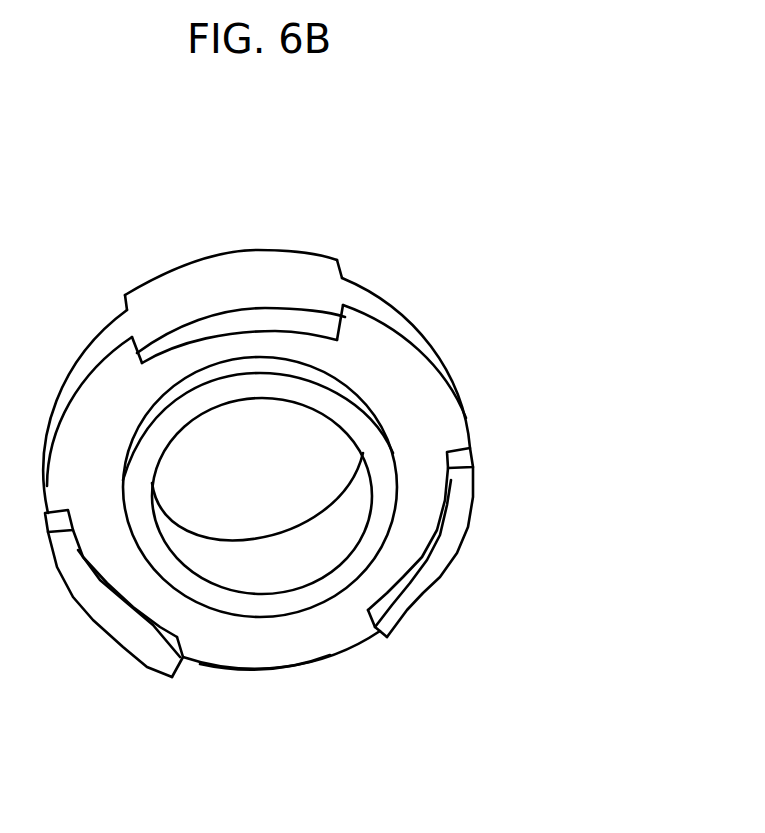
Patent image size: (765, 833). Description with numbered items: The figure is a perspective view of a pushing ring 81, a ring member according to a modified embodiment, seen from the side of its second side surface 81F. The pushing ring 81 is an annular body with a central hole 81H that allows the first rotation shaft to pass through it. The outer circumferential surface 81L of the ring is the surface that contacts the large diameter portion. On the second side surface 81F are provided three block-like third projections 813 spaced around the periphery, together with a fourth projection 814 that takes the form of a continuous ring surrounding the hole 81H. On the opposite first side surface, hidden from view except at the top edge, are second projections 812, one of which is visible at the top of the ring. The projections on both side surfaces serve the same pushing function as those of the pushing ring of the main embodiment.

The pushing ring 81 is at (454, 229).
The hole 81H is at (282, 445).
The second side surface 81F is at (240, 632).
The outer circumferential surface 81L is at (235, 250).
The second projections 812 is at (237, 250).
The third projections 813 is at (100, 617).
The fourth projection 814 is at (275, 606).